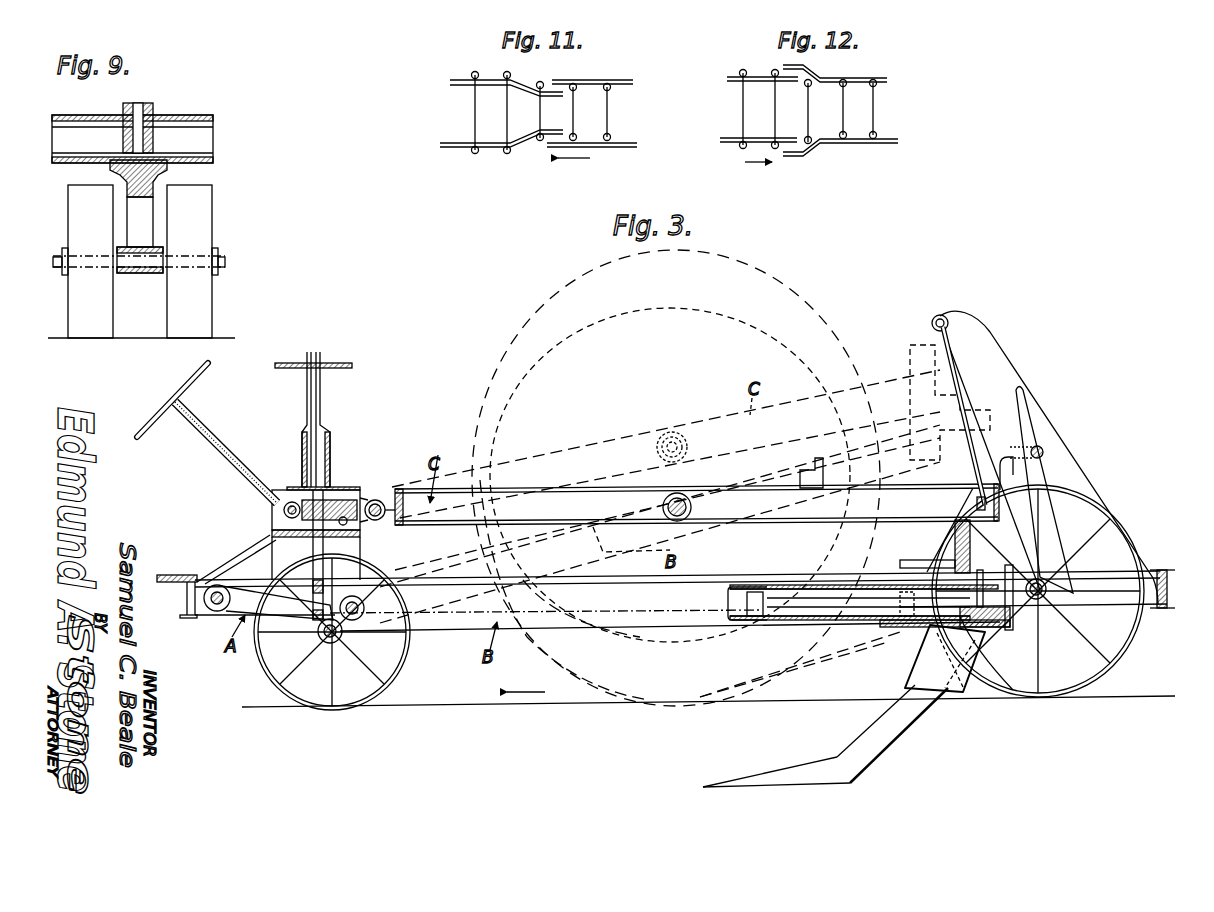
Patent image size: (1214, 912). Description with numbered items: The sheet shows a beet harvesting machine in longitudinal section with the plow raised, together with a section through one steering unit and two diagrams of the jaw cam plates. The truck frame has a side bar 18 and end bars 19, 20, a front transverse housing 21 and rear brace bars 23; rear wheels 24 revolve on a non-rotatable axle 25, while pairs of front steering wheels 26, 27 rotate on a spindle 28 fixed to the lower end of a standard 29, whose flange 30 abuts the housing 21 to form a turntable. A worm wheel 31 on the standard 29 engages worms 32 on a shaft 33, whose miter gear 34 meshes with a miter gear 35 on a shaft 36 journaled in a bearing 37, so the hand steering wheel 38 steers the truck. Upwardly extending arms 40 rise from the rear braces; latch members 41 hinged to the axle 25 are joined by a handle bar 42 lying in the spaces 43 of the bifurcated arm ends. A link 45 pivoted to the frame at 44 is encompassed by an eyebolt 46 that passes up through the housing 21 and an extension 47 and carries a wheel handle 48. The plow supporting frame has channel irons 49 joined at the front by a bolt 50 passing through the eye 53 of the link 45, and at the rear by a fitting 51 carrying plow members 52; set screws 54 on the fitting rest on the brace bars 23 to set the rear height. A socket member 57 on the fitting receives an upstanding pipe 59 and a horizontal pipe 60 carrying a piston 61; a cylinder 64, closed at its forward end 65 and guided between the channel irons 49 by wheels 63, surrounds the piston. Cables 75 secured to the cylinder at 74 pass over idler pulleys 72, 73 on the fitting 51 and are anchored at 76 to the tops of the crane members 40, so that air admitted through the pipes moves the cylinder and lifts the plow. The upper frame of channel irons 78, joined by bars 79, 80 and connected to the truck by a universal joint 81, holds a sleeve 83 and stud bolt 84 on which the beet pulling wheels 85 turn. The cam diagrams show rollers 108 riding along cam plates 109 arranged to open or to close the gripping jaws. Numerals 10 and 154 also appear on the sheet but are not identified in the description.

In FIG. 3, the frame 10 is at (981, 505).
In FIG. 3, the side bar 18 is at (260, 572).
In FIG. 3, the end bar 19 is at (177, 596).
In FIG. 3, the end bar 20 is at (1165, 585).
In FIG. 9, the transverse frame or housing 21 is at (200, 138).
In FIG. 3, the transverse frame or housing 21 is at (272, 523).
In FIG. 3, the brace bar 23 is at (1100, 580).
In FIG. 3, the rear wheels 24 is at (1128, 643).
In FIG. 3, the non-rotatable axle 25 is at (1048, 583).
In FIG. 9, the front steering wheels 26 is at (230, 232).
In FIG. 3, the front steering wheels 27 is at (410, 650).
In FIG. 9, the spindle 28 is at (145, 265).
In FIG. 3, the spindle 28 is at (318, 636).
In FIG. 9, the standard 29 is at (145, 217).
In FIG. 3, the standard 29 is at (352, 554).
In FIG. 9, the flange 30 is at (170, 167).
In FIG. 3, the flange 30 is at (316, 555).
In FIG. 9, the worm wheel 31 is at (112, 138).
In FIG. 3, the worm wheel 31 is at (338, 492).
In FIG. 3, the worms 32 is at (273, 509).
In FIG. 3, the shaft 33 is at (277, 508).
In FIG. 3, the miter gear 34 is at (277, 505).
In FIG. 3, the miter gear 35 is at (285, 490).
In FIG. 3, the shaft 36 is at (242, 459).
In FIG. 3, the bearing 37 is at (215, 434).
In FIG. 3, the hand steering wheel 38 is at (172, 397).
In FIG. 3, the upwardly extending arms 40 is at (1058, 431).
In FIG. 3, the latch members 41 is at (1012, 526).
In FIG. 3, the handle bar 42 is at (1043, 458).
In FIG. 3, the spaces 43 is at (1046, 450).
In FIG. 3, the pivot 44 is at (218, 610).
In FIG. 3, the rearwardly extending link 45 is at (283, 603).
In FIG. 3, the eyebolt 46 is at (352, 548).
In FIG. 3, the extension 47 is at (333, 444).
In FIG. 3, the wheel handle 48 is at (338, 362).
In FIG. 3, the channel irons 49 is at (557, 620).
In FIG. 3, the bolt 50 is at (362, 620).
In FIG. 3, the fitting 51 is at (992, 655).
In FIG. 3, the plow members 52 is at (798, 772).
In FIG. 3, the eye 53 is at (396, 601).
In FIG. 3, the set screws 54 is at (905, 562).
In FIG. 3, the socket member 57 is at (1017, 618).
In FIG. 3, the upstanding pipe 59 is at (985, 570).
In FIG. 3, the horizontally disposed pipe 60 is at (849, 590).
In FIG. 3, the piston 61 is at (771, 598).
In FIG. 3, the wheels 63 is at (755, 592).
In FIG. 3, the cylinder 64 is at (801, 598).
In FIG. 3, the closed forward end 65 is at (729, 601).
In FIG. 3, the idler pulley 72 is at (1047, 592).
In FIG. 3, the idler pulley 73 is at (1050, 612).
In FIG. 3, the cable attachment point 74 is at (945, 658).
In FIG. 3, the cables 75 is at (956, 449).
In FIG. 3, the cable anchorage 76 is at (941, 315).
In FIG. 3, the channel irons 78 is at (543, 503).
In FIG. 3, the bar 79 is at (389, 490).
In FIG. 3, the bar 80 is at (1000, 503).
In FIG. 3, the universal joint 81 is at (375, 498).
In FIG. 3, the sleeve 83 is at (692, 507).
In FIG. 3, the stud bolt 84 is at (673, 497).
In FIG. 3, the beet pulling mechanism supporting wheels 85 is at (765, 276).
In FIG. 11, the rollers 108 is at (509, 78).
In FIG. 12, the rollers 108 is at (738, 75).
In FIG. 11, the cam plates 109 is at (470, 80).
In FIG. 12, the cam plates 109 is at (747, 76).
In FIG. 3, the pawl 154 is at (950, 575).